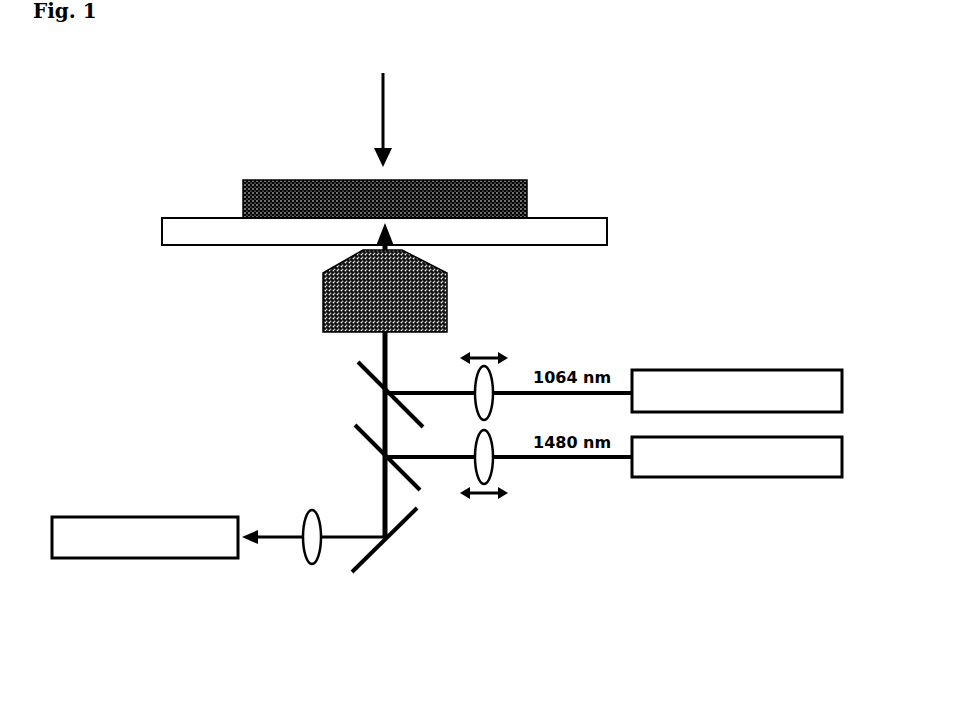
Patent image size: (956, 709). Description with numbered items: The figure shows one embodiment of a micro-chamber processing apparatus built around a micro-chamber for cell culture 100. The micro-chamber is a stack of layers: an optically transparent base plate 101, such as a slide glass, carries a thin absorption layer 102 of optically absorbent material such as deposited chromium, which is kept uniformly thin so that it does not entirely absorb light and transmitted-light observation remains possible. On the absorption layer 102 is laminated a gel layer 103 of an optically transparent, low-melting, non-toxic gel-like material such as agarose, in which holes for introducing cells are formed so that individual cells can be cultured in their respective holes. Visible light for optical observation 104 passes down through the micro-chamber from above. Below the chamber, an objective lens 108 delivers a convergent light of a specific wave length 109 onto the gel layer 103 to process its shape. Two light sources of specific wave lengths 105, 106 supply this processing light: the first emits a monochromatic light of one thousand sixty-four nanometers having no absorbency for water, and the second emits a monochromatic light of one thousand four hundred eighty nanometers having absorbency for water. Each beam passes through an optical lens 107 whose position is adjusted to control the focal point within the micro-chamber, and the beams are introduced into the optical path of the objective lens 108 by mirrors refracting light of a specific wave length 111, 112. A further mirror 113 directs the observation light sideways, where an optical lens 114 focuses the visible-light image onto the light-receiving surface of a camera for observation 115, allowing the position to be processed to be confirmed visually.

The micro-chamber for cell culture 100 is at (195, 183).
The base plate 101 is at (224, 233).
The absorption layer 102 is at (590, 218).
The gel layer 103 is at (515, 180).
The visible light for optical observation 104 is at (383, 118).
The light source of a specific wave length 105 is at (675, 370).
The light source of a specific wave length 106 is at (680, 477).
The optical lens 107 is at (491, 412).
The objective lens 108 is at (323, 318).
The convergent light of a specific wave length 109 is at (393, 350).
The mirror refracting a light of a specific wave length 111 is at (373, 382).
The mirror refracting a light of a specific wave length 112 is at (370, 448).
The mirror 113 is at (372, 555).
The optical lens 114 is at (305, 560).
The camera for observation 115 is at (80, 517).